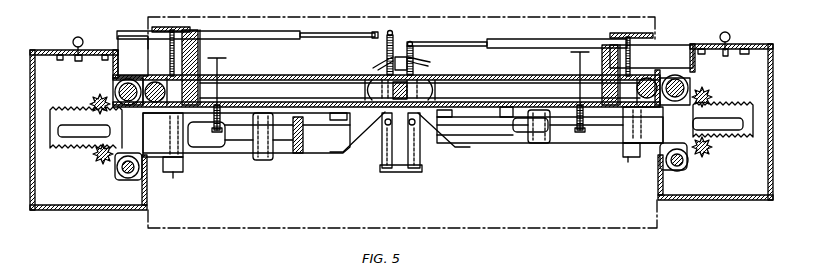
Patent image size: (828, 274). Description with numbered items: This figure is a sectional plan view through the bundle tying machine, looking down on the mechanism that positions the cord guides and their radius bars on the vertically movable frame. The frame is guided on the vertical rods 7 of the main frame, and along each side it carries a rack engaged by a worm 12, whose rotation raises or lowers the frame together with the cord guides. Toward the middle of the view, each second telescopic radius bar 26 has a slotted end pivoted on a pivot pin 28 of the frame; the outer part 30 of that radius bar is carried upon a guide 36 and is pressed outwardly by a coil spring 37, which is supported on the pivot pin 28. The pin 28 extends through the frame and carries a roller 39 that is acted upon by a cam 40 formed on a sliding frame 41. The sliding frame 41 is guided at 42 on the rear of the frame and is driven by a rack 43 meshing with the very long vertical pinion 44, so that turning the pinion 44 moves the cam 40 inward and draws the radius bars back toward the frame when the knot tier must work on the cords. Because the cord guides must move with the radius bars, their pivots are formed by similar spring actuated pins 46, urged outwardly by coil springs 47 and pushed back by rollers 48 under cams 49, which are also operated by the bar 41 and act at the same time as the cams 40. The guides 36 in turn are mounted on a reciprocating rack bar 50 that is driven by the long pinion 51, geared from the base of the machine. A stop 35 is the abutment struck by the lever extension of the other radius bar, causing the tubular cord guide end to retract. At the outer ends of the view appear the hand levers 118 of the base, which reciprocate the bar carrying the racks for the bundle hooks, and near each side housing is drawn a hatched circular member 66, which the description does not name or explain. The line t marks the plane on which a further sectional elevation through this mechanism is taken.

The hand lever 118 is at (402, 39).
The part of radius bar 30 is at (543, 48).
The second telescopic radius bar 26 is at (398, 40).
The spring actuated pin 46 is at (402, 46).
The coil spring 47 is at (384, 57).
The roller 48 is at (397, 117).
The cam 49 is at (368, 140).
The roller 39 is at (173, 118).
The cam 40 is at (399, 133).
The guide 42 is at (182, 168).
The pivot pin 28 is at (396, 181).
The worm 12 is at (113, 87).
The vertical rod 7 is at (155, 82).
The coil spring 37 is at (402, 53).
The guide 36 is at (198, 45).
The stop 35 is at (398, 92).
The section line t is at (117, 62).
The rack 43 is at (55, 150).
The sliding frame 41 is at (750, 138).
The reciprocating rack bar 50 is at (60, 103).
The long pinion 51 is at (94, 102).
The vertical pinion 44 is at (702, 180).
The roller 66 is at (118, 173).